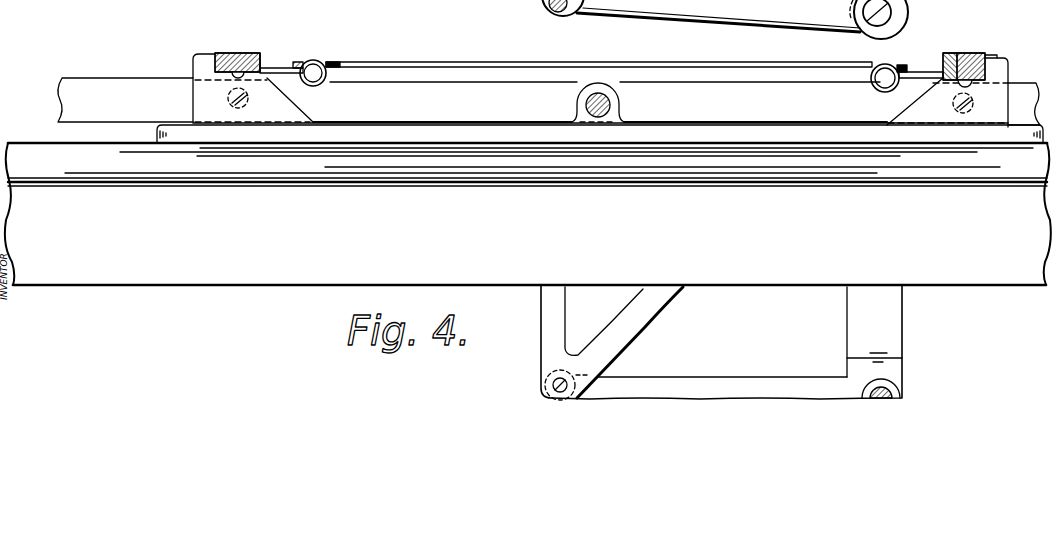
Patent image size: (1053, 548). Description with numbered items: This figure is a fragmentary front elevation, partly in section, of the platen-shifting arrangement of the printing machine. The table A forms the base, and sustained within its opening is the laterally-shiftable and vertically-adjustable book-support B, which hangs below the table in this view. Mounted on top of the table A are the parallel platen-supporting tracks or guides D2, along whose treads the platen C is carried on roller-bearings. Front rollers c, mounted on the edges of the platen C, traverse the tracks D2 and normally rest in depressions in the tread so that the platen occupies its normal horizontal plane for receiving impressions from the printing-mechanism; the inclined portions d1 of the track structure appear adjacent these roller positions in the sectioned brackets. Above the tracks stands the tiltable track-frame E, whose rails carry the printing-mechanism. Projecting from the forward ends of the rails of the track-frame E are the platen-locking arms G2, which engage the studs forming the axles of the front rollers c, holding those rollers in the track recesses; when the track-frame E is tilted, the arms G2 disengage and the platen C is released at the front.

The table A is at (23, 143).
The book-support B is at (721, 342).
The platen C is at (423, 64).
The platen-supporting track D2 is at (488, 48).
The tiltable track-frame E is at (238, 52).
The platen-locking arm G2 is at (278, 68).
The front roller c is at (315, 60).
The bracket rib d1 is at (882, 93).